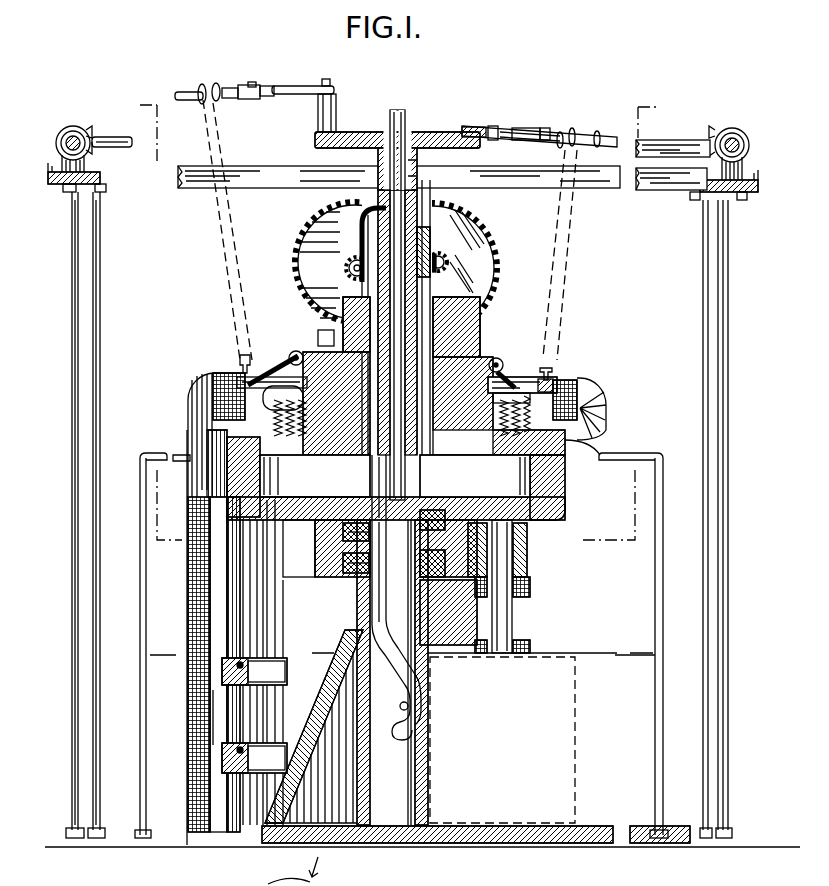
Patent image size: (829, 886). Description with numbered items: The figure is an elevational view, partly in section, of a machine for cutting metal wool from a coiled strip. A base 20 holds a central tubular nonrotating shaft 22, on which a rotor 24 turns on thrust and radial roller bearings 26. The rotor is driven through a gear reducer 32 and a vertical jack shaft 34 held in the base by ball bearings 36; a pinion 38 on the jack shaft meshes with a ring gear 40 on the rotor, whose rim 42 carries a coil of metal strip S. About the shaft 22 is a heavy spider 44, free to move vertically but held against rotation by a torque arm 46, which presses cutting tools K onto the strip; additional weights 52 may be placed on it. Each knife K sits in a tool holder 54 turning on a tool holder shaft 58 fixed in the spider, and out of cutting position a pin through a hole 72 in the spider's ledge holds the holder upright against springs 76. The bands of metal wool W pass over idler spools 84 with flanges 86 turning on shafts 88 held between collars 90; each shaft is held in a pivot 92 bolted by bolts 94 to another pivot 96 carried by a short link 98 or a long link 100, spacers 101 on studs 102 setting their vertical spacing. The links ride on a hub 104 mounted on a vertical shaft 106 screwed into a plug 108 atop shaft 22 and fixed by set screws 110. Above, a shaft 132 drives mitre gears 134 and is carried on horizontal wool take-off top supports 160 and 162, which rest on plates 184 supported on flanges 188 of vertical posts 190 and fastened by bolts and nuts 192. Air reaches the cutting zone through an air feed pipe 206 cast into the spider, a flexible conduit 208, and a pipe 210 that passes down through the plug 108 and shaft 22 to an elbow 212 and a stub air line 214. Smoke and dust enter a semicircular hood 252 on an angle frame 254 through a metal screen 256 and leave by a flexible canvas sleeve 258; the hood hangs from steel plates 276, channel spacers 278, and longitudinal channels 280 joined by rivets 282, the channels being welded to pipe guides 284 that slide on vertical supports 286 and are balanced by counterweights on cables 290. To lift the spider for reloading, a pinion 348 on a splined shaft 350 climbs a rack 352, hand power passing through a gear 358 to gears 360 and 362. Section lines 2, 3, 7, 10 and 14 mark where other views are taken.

The base 20 is at (500, 843).
The central tubular nonrotating shaft 22 is at (418, 478).
The rotor 24 is at (566, 500).
The thrust and radial roller bearings 26 is at (446, 500).
The gear reducer 32 is at (576, 746).
The jack shaft 34 is at (510, 612).
The ball bearings 36 is at (528, 583).
The pinion 38 is at (527, 552).
The ring gear 40 is at (302, 578).
The rim 42 is at (580, 446).
The spider 44 is at (317, 460).
The torque arm 46 is at (387, 505).
The additional weights 52 is at (318, 336).
The tool holder 54 is at (520, 376).
The tool holder shaft 58 is at (518, 426).
The hole 72 is at (503, 358).
The springs 76 is at (272, 420).
The idler spools 84 is at (220, 80).
The flanges 86 is at (200, 88).
The shafts 88 is at (192, 100).
The collars 90 is at (228, 100).
The pivot 92 is at (250, 82).
The bolts 94 is at (268, 86).
The pivot 96 is at (256, 99).
The short link 98 is at (472, 126).
The long link 100 is at (300, 86).
The spacers 101 is at (337, 112).
The studs 102 is at (330, 84).
The hub 104 is at (358, 134).
The vertical shaft 106 is at (405, 122).
The plug 108 is at (410, 232).
The set screws 110 is at (420, 172).
The shaft 132 is at (690, 141).
The mitre gears 134 is at (750, 130).
The horizontal wool take-off top support 160 is at (605, 188).
The horizontal wool take-off top support 162 is at (52, 183).
The plates 184 is at (706, 193).
The flanges 188 is at (747, 198).
The vertical posts 190 is at (732, 336).
The bolts and nuts 192 is at (697, 202).
The air feed pipe 206 is at (282, 363).
The flexible conduit 208 is at (362, 210).
The pipe 210 is at (384, 554).
The elbow 212 is at (397, 736).
The stub air line 214 is at (398, 675).
The hood 252 is at (195, 378).
The angle frame 254 is at (188, 412).
The metal screen 256 is at (224, 372).
The flexible canvas sleeve 258 is at (199, 582).
The steel plates 276 is at (284, 611).
The channel spacers 278 is at (287, 686).
The longitudinally placed channels 280 is at (240, 665).
The rivets 282 is at (254, 715).
The pipe guides 284 is at (214, 722).
The vertical supports 286 is at (268, 800).
The cables 290 is at (232, 623).
The pinion 348 is at (438, 270).
The splined shaft 350 is at (444, 262).
The rack 352 is at (440, 254).
The gear 358 is at (300, 262).
The gear 360 is at (348, 270).
The gear 362 is at (492, 290).
The web W is at (228, 258).
The cutting tools K is at (551, 372).
The coil of metal strip S is at (566, 380).
The section line 2 is at (40, 132).
The section line 3 is at (210, 194).
The section line 7 is at (198, 60).
The section line 10 is at (540, 346).
The section line 14 is at (54, 104).